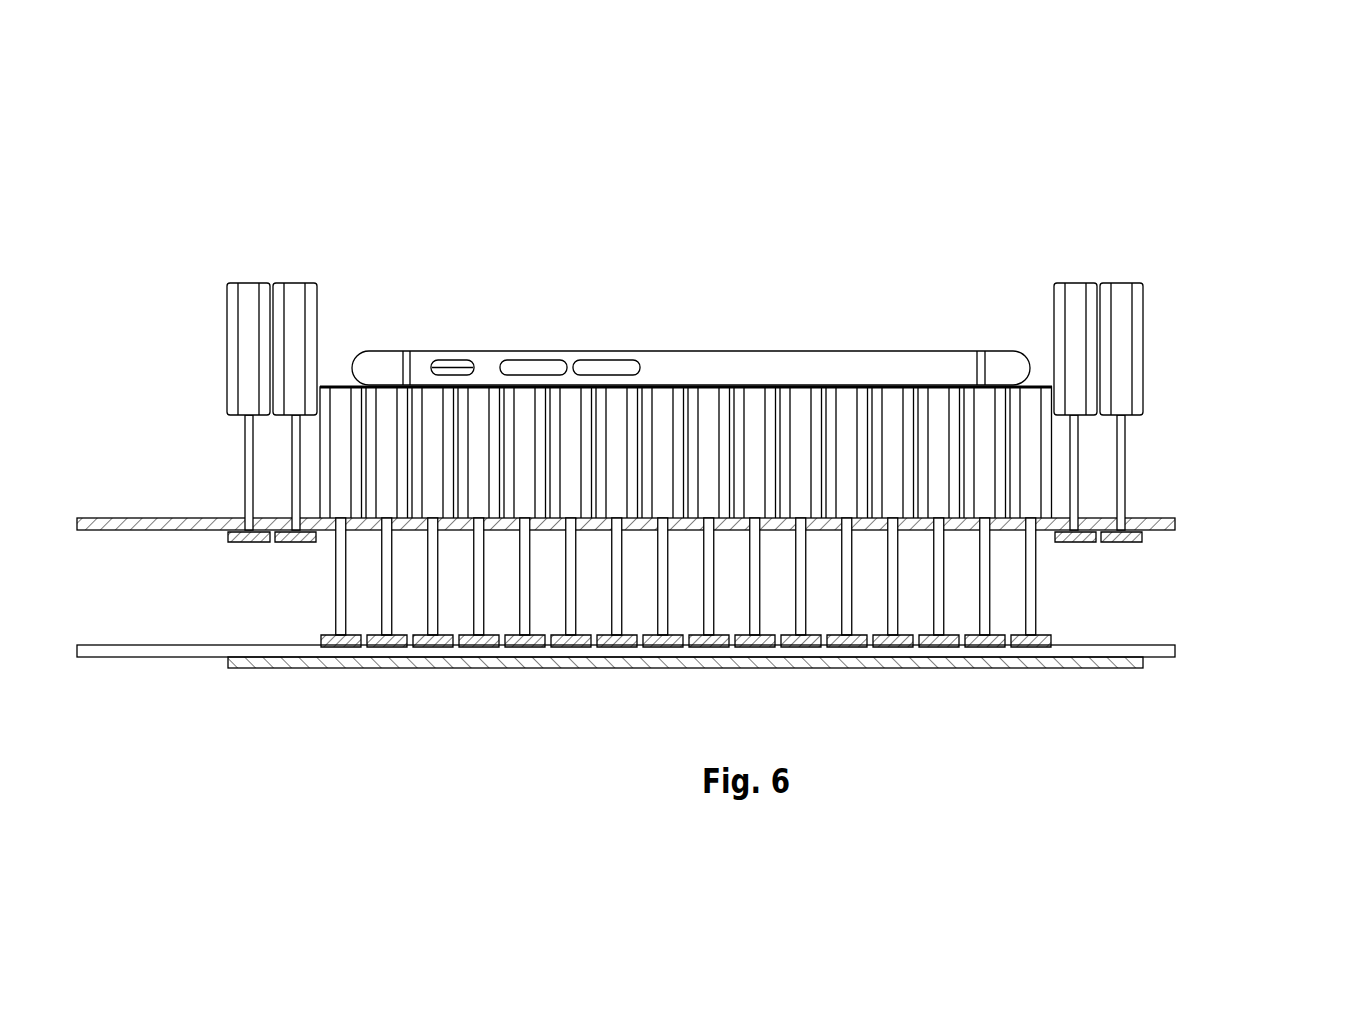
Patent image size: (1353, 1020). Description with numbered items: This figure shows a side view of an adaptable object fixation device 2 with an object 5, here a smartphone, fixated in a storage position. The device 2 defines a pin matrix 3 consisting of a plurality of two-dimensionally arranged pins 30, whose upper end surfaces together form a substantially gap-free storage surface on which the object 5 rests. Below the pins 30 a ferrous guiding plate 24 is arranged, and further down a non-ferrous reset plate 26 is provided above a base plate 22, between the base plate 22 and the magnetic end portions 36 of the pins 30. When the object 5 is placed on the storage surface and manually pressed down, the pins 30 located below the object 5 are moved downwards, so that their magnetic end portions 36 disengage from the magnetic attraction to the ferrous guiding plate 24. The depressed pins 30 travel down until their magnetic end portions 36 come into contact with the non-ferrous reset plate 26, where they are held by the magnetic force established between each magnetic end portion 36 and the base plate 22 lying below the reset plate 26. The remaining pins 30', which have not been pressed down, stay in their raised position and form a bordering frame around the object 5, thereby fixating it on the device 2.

The adaptable object fixation device 2 is at (1140, 218).
The pin matrix 3 is at (1258, 153).
The object 5 is at (747, 340).
The base plate 22 is at (1140, 669).
The ferrous guiding plate 24 is at (1177, 525).
The non-ferrous reset plate 26 is at (1177, 650).
The pins 30 is at (771, 452).
The remaining pins 30' is at (685, 382).
The magnetic end portions 36 is at (1053, 630).